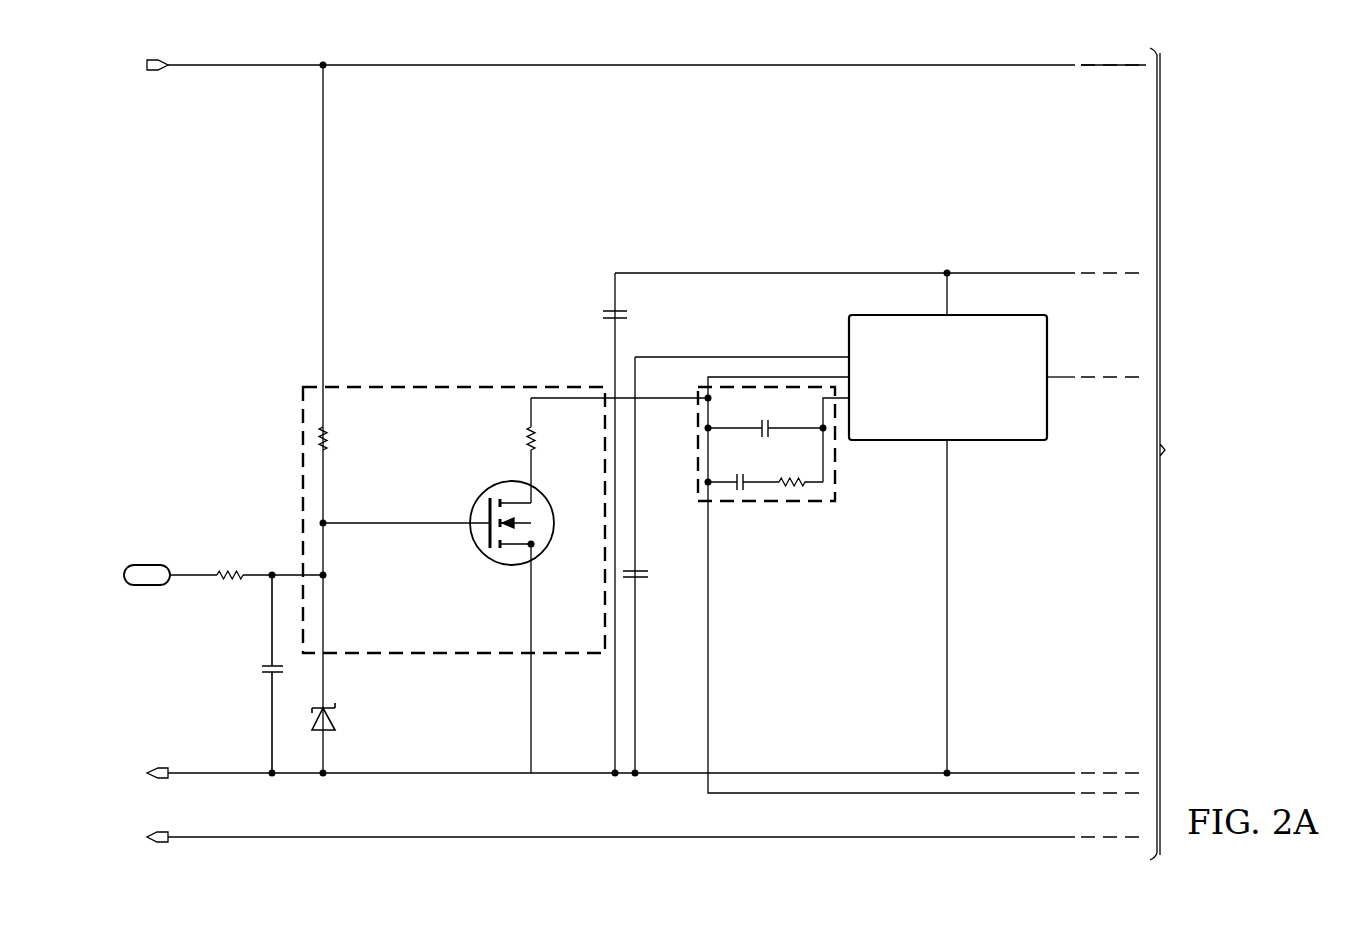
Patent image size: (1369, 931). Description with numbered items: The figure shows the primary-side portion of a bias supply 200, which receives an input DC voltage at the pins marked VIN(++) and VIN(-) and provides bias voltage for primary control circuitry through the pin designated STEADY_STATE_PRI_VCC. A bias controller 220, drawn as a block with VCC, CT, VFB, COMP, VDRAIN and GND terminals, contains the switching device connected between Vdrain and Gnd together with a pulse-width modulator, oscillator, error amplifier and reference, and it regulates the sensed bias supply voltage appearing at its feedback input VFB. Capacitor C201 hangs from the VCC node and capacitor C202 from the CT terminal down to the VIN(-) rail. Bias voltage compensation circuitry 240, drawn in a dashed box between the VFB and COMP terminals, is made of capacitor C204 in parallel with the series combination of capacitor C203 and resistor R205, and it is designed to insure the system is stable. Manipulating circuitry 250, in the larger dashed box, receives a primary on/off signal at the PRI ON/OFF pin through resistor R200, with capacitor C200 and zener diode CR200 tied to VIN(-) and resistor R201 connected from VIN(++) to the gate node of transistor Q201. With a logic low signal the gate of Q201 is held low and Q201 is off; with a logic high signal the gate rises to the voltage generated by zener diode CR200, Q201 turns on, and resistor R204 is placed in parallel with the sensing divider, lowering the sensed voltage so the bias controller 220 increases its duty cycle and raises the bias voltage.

The bias supply 200 is at (1224, 120).
The bias controller 220 is at (988, 440).
The bias voltage compensation circuitry 240 is at (781, 510).
The manipulating circuitry 250 is at (376, 381).
The resistor R200 is at (229, 562).
The resistor R201 is at (349, 439).
The resistor R204 is at (557, 450).
The resistor R205 is at (797, 469).
The capacitor C200 is at (245, 674).
The capacitor C201 is at (640, 315).
The capacitor C202 is at (661, 575).
The capacitor C203 is at (743, 469).
The capacitor C204 is at (765, 416).
The zener diode CR200 is at (356, 718).
The transistor Q201 is at (438, 615).